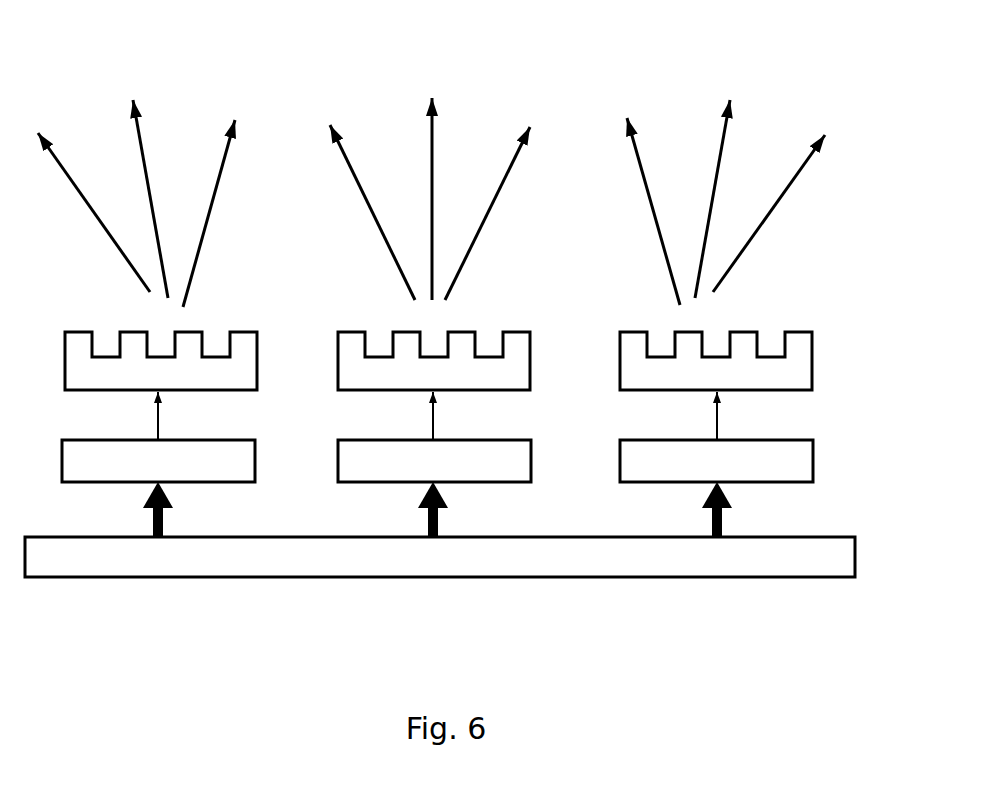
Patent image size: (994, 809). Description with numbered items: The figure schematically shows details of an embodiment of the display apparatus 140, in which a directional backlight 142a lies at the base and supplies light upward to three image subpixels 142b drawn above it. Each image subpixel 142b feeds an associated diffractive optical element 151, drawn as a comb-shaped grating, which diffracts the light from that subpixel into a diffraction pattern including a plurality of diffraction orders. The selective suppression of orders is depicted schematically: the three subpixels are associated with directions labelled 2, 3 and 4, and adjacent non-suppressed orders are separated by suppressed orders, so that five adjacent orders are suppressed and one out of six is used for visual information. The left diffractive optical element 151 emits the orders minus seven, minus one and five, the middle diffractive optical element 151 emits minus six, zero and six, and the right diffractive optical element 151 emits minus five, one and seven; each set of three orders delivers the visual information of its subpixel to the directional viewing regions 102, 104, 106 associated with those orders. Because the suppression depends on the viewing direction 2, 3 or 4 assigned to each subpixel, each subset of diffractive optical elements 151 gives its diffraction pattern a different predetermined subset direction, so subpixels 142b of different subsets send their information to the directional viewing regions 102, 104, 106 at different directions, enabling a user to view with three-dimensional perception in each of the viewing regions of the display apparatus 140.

The directional viewing region 102 is at (349, 173).
The directional viewing region 104 is at (422, 162).
The directional viewing region 106 is at (512, 180).
The direction 2 is at (136, 159).
The direction 3 is at (438, 155).
The direction 4 is at (720, 155).
The diffractive optical element 151 is at (850, 358).
The image subpixel 142b is at (850, 450).
The directional backlight 142a is at (440, 557).
The display apparatus 140 is at (140, 607).